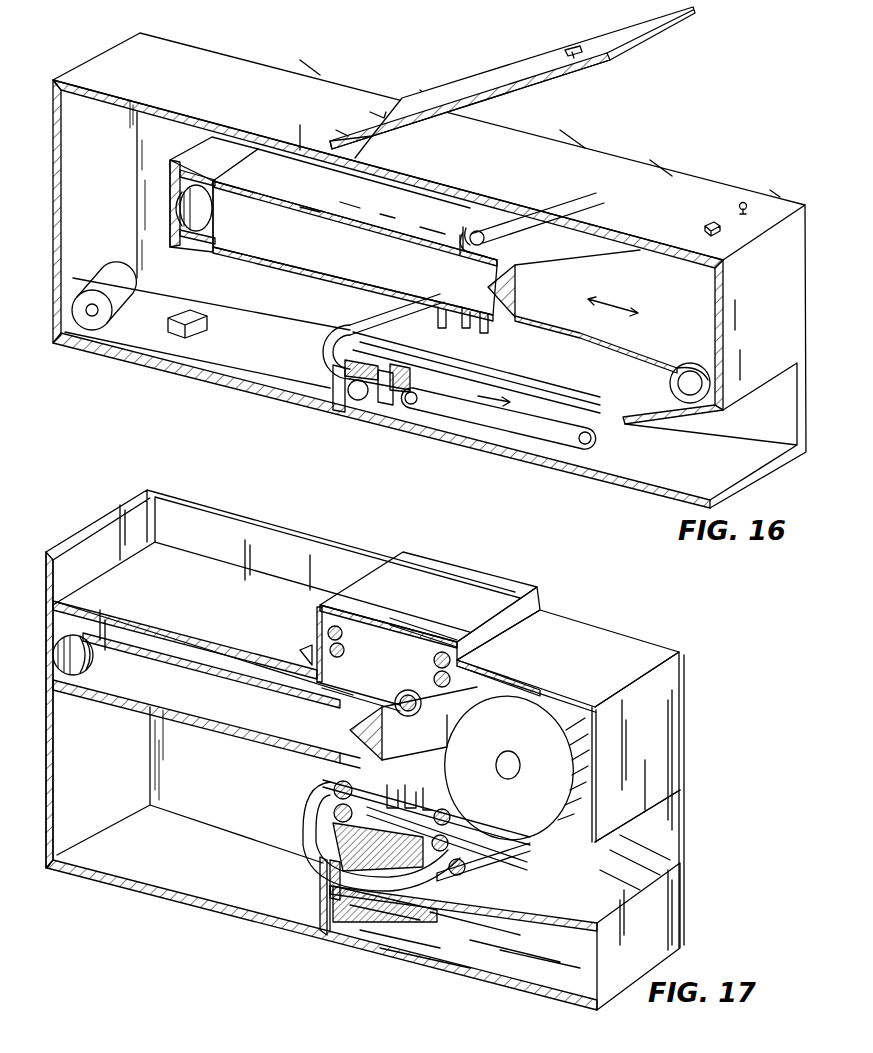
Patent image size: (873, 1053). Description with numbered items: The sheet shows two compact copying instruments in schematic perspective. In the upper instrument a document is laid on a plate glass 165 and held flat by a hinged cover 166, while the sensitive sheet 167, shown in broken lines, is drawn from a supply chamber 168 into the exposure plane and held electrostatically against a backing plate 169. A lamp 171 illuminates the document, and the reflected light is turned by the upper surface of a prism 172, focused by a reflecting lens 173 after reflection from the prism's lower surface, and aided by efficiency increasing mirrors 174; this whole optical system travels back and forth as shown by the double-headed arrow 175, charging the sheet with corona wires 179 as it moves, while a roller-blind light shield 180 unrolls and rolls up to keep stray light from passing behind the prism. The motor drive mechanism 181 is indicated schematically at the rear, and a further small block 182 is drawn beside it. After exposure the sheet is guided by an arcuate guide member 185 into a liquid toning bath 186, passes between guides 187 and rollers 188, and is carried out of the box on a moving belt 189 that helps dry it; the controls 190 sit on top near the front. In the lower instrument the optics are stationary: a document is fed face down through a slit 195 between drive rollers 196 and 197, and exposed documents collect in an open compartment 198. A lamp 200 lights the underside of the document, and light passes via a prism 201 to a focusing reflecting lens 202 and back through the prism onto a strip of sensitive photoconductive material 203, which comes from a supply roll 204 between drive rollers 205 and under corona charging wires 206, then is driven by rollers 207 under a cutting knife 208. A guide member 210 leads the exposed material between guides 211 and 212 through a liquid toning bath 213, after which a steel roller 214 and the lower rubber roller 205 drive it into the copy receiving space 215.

In FIG. 16, the plate glass 165 is at (612, 163).
In FIG. 16, the hinged cover 166 is at (532, 58).
In FIG. 16, the sensitive sheet 167 is at (542, 373).
In FIG. 16, the supply chamber 168 is at (420, 410).
In FIG. 16, the backing plate 169 is at (577, 388).
In FIG. 16, the lamp 171 is at (467, 248).
In FIG. 16, the prism 172 is at (507, 287).
In FIG. 16, the reflecting lens 173 is at (205, 218).
In FIG. 16, the efficiency increasing mirrors 174 is at (337, 217).
In FIG. 16, the double-headed arrow 175 is at (610, 306).
In FIG. 16, the corona wires 179 is at (480, 335).
In FIG. 16, the light shield 180 is at (684, 362).
In FIG. 16, the motor drive mechanism 181 is at (108, 307).
In FIG. 16, the block 182 is at (196, 333).
In FIG. 16, the arcuate guide member 185 is at (320, 356).
In FIG. 16, the liquid toning bath 186 is at (335, 402).
In FIG. 16, the guides 187 is at (356, 402).
In FIG. 16, the rollers 188 is at (385, 412).
In FIG. 16, the moving belt 189 is at (497, 378).
In FIG. 16, the controls 190 is at (744, 203).
In FIG. 17, the slit 195 is at (527, 633).
In FIG. 17, the drive roller 196 is at (446, 680).
In FIG. 17, the drive roller 197 is at (317, 637).
In FIG. 17, the open compartment 198 is at (207, 527).
In FIG. 17, the lamp 200 is at (418, 706).
In FIG. 17, the prism 201 is at (357, 722).
In FIG. 17, the focusing reflecting lens 202 is at (80, 678).
In FIG. 17, the strip of sensitive photoconductive material 203 is at (423, 752).
In FIG. 17, the supply roll 204 is at (540, 748).
In FIG. 17, the drive rollers 205 is at (467, 817).
In FIG. 17, the corona charging wires 206 is at (427, 778).
In FIG. 17, the rollers 207 is at (333, 790).
In FIG. 17, the cutting knife 208 is at (330, 763).
In FIG. 17, the guide member 210 is at (297, 827).
In FIG. 17, the guide 211 is at (337, 900).
In FIG. 17, the guide 212 is at (311, 896).
In FIG. 17, the liquid toning bath 213 is at (453, 945).
In FIG. 17, the steel roller 214 is at (477, 875).
In FIG. 17, the copy receiving space 215 is at (607, 873).